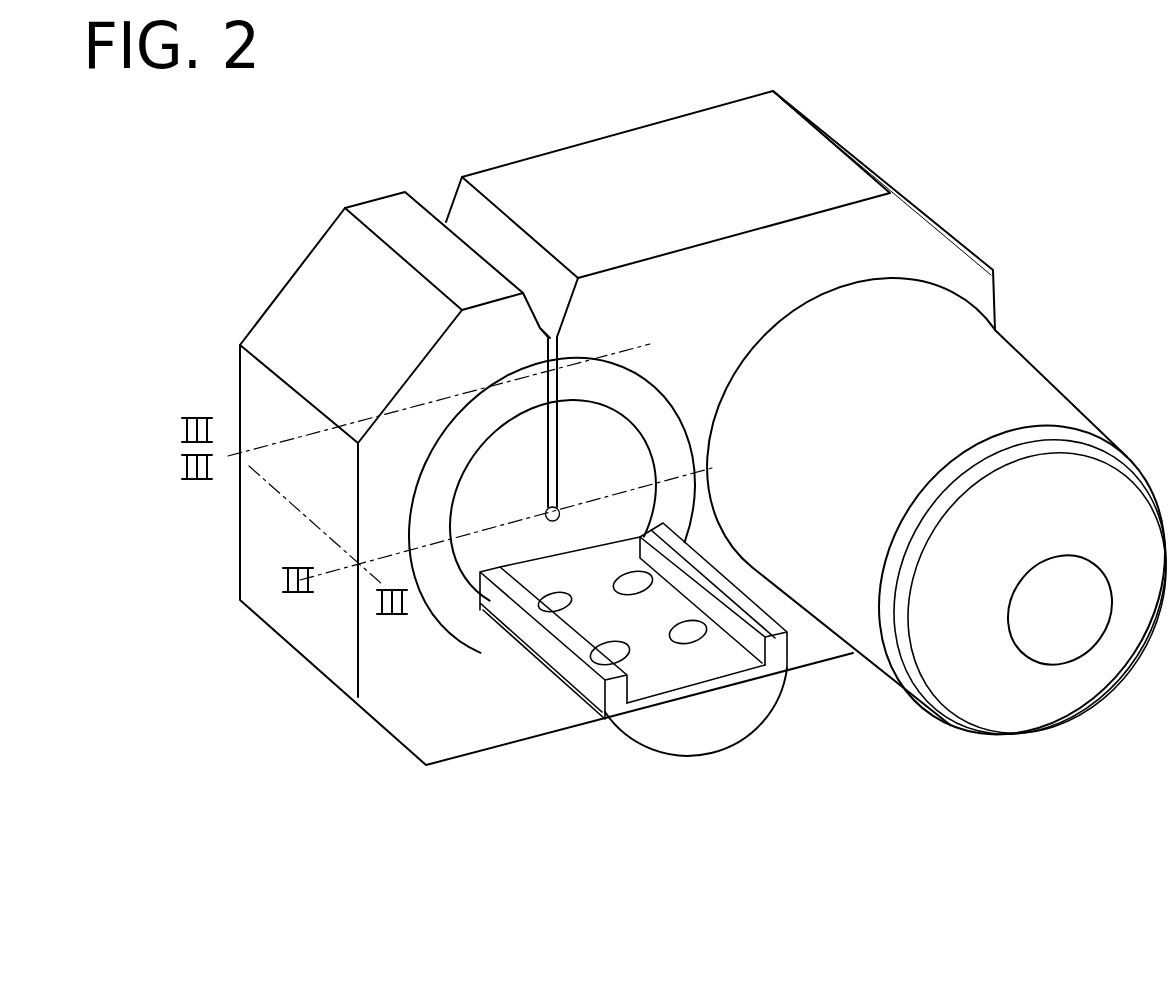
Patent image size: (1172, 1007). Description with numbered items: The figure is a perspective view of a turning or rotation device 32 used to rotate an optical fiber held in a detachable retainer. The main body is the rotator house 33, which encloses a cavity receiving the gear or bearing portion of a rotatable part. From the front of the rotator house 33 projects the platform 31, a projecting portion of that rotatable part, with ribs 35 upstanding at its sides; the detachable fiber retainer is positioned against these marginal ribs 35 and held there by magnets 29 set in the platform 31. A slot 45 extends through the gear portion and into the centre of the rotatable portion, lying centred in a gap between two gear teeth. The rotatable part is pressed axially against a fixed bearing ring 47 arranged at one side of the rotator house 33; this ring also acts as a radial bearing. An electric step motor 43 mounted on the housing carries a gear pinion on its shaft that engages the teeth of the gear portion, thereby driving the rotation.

The rotation device 32 is at (570, 126).
The rotator house 33 is at (728, 118).
The electric step motor 43 is at (1005, 365).
The bearing ring 47 is at (640, 385).
The slot 45 is at (548, 470).
The magnets 29 is at (686, 632).
The ribs 35 is at (580, 660).
The platform 31 is at (675, 735).